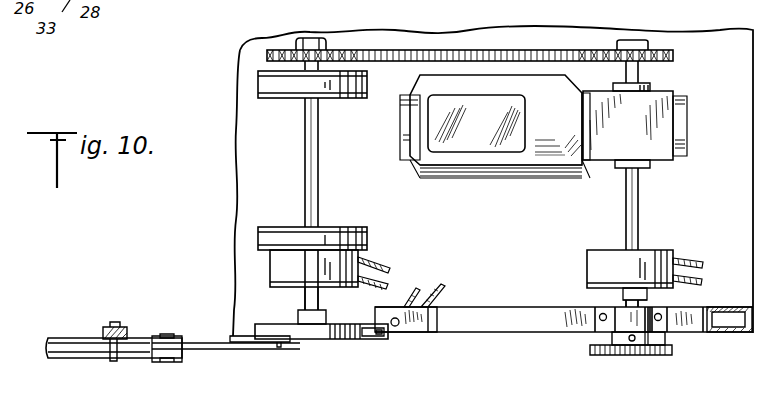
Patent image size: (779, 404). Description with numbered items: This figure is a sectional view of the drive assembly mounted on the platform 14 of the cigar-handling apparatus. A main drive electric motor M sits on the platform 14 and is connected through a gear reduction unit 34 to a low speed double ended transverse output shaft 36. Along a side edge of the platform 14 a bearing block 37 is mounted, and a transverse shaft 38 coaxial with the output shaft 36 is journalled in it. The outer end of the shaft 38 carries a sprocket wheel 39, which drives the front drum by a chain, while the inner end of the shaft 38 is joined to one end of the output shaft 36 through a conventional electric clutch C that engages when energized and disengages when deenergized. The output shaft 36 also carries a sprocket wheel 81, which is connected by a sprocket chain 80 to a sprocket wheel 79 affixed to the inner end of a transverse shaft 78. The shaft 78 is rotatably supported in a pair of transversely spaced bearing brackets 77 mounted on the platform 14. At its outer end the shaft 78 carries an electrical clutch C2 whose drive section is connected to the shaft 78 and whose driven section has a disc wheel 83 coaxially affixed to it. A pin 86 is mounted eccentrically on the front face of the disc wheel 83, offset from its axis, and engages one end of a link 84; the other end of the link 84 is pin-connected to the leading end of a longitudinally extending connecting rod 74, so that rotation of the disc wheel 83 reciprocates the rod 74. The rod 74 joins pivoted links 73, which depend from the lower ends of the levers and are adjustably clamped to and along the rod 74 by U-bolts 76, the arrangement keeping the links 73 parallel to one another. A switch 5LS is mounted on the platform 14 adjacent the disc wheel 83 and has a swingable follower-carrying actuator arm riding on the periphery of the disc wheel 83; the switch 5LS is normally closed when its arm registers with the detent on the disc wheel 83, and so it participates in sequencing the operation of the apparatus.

The platform 14 is at (490, 208).
The main drive electric motor M is at (533, 157).
The gear reduction unit 34 is at (653, 111).
The low speed double ended transverse output shaft 36 is at (640, 79).
The bearing block 37 is at (666, 328).
The transverse shaft 38 is at (644, 303).
The sprocket wheel 39 is at (612, 348).
The pivoted link 73 is at (124, 327).
The connecting rod 74 is at (62, 338).
The U-bolt 76 is at (111, 358).
The bearing bracket 77 is at (348, 98).
The transverse shaft 78 is at (306, 134).
The sprocket wheel 79 is at (314, 44).
The sprocket chain 80 is at (495, 50).
The sprocket wheel 81 is at (630, 44).
The disc wheel 83 is at (311, 340).
The link 84 is at (200, 343).
The pin 86 is at (282, 348).
The electric clutch C is at (596, 250).
The electrical clutch C2 is at (345, 270).
The switch 5LS is at (414, 327).